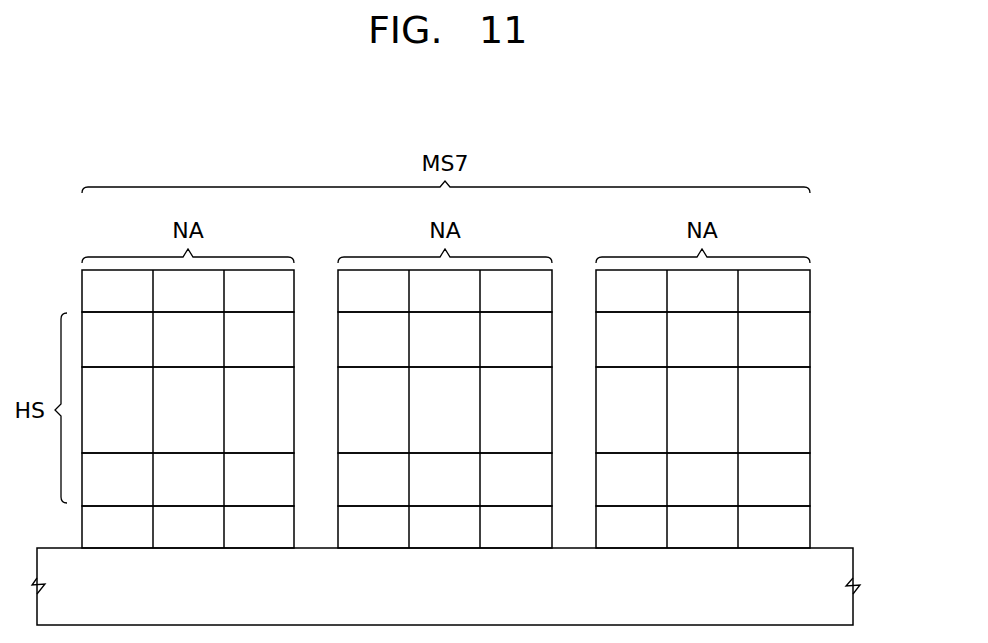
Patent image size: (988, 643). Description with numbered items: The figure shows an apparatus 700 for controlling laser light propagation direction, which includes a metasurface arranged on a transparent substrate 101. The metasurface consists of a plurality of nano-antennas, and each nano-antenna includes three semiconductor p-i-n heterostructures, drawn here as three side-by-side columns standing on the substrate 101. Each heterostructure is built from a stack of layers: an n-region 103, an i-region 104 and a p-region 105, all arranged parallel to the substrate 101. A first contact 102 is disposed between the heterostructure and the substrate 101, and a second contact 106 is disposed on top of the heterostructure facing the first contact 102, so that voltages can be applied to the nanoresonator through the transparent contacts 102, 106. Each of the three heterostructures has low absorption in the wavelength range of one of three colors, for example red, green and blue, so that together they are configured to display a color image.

The substrate 101 is at (75, 595).
The first contact 102 is at (96, 536).
The n-region 103 is at (96, 490).
The i-region 104 is at (96, 418).
The p-region 105 is at (96, 350).
The second contact 106 is at (96, 305).
The apparatus 700 is at (845, 230).